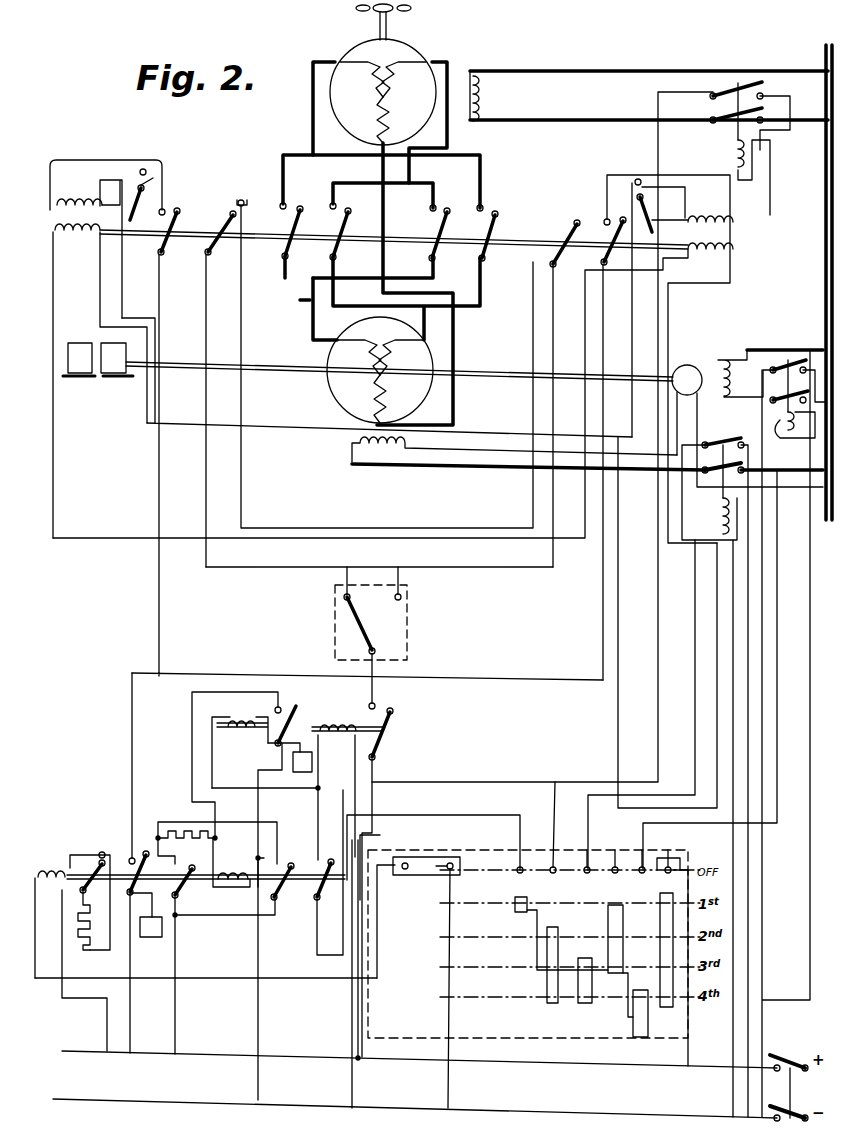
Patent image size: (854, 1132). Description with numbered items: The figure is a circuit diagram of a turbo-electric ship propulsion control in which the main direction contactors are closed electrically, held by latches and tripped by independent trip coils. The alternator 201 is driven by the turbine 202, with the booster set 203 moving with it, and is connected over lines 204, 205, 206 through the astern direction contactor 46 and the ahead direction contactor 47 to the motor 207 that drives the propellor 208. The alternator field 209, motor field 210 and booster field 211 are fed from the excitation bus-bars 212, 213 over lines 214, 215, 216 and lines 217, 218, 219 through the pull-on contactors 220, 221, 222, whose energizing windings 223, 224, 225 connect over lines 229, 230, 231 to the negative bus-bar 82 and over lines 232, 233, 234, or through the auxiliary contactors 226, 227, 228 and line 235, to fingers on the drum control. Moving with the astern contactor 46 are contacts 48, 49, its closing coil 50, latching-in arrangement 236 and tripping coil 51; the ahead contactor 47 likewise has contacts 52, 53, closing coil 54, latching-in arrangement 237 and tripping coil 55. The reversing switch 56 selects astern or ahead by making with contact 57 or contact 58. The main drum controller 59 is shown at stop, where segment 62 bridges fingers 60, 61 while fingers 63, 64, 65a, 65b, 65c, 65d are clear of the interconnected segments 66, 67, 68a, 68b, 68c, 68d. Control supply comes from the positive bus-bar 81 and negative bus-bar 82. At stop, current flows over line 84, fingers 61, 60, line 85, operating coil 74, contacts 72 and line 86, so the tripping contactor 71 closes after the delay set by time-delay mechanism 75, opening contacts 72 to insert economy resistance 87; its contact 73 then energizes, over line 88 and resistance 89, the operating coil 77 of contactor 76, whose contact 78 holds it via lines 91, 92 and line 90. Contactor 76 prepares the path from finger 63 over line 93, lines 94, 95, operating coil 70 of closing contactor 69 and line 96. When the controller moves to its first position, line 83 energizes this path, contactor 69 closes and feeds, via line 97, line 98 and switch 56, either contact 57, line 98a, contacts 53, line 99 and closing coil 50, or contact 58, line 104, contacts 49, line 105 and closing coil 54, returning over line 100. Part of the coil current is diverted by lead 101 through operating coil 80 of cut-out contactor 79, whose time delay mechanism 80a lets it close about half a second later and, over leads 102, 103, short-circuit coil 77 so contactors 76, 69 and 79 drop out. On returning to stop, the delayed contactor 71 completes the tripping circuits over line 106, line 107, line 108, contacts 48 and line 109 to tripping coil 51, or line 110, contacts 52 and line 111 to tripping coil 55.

The astern direction contactor 46 is at (343, 238).
The ahead direction contactor 47 is at (440, 245).
The contacts 48 is at (180, 210).
The contacts 49 is at (218, 240).
The closing coil 50 is at (76, 236).
The tripping coil 51 is at (68, 200).
The contacts 52 is at (608, 250).
The contacts 53 is at (562, 270).
The closing coil 54 is at (733, 248).
The tripping coil 55 is at (733, 221).
The reversing switch 56 is at (407, 648).
The contact 57 is at (340, 597).
The contact 58 is at (402, 597).
The main drum controller 59 is at (492, 1040).
The finger 60 is at (403, 870).
The finger 61 is at (447, 870).
The segment 62 is at (415, 878).
The finger 63 is at (517, 872).
The finger 64 is at (689, 958).
The finger 65a is at (551, 873).
The finger 65b is at (586, 873).
The finger 65c is at (614, 873).
The finger 65d is at (645, 866).
The segment 66 is at (515, 908).
The segment 67 is at (666, 1008).
The segment 68a is at (547, 985).
The segment 68b is at (585, 980).
The segment 68c is at (613, 975).
The segment 68d is at (640, 1037).
The closing contactor 69 is at (380, 746).
The operating coil 70 is at (347, 791).
The tripping contactor 71 is at (150, 852).
The contacts 72 is at (90, 855).
The contact 73 is at (188, 880).
The operating coil 74 is at (45, 868).
The time-delay mechanism 75 is at (147, 930).
The contactor 76 is at (330, 860).
The operating coil 77 is at (236, 862).
The contact 78 is at (278, 862).
The cut-out contactor 79 is at (282, 707).
The operating coil 80 is at (240, 720).
The time delay mechanism 80a is at (293, 762).
The positive bus-bar 81 is at (565, 1067).
The negative bus-bar 82 is at (605, 1117).
The line 83 is at (688, 1010).
The line 84 is at (448, 1005).
The line 85 is at (38, 905).
The line 86 is at (78, 998).
The economy resistance 87 is at (88, 930).
The line 88 is at (178, 1022).
The resistance 89 is at (168, 830).
The line 90 is at (259, 1008).
The line 91 is at (216, 915).
The line 92 is at (278, 832).
The line 93 is at (315, 955).
The line 94 is at (345, 812).
The line 95 is at (318, 770).
The line 96 is at (350, 1024).
The line 97 is at (362, 1055).
The line 98 is at (375, 702).
The line 98a is at (512, 567).
The line 99 is at (92, 538).
The line 100 is at (282, 428).
The lead 101 is at (312, 790).
The lead 102 is at (255, 790).
The lead 103 is at (192, 722).
The line 104 is at (252, 567).
The line 105 is at (330, 528).
The line 106 is at (128, 1050).
The line 107 is at (132, 768).
The line 108 is at (160, 505).
The line 109 is at (113, 160).
The line 110 is at (533, 680).
The line 111 is at (620, 175).
The alternator 201 is at (330, 388).
The turbine 202 is at (110, 378).
The booster set 203 is at (686, 365).
The line 204 is at (306, 303).
The line 205 is at (383, 238).
The line 206 is at (447, 326).
The motor 207 is at (363, 48).
The propellor 208 is at (412, 10).
The alternator field 209 is at (385, 458).
The motor field 210 is at (485, 72).
The booster field 211 is at (723, 358).
The excitation bus-bar 212 is at (826, 66).
The excitation bus-bar 213 is at (826, 60).
The line 214 is at (584, 71).
The line 215 is at (790, 348).
The line 216 is at (797, 497).
The line 217 is at (565, 120).
The line 218 is at (757, 368).
The line 219 is at (495, 468).
The contactor 220 is at (725, 478).
The contactor 221 is at (730, 110).
The contactor 222 is at (772, 368).
The energizing winding 223 is at (718, 512).
The energizing winding 224 is at (745, 148).
The energizing winding 225 is at (794, 434).
The auxiliary contactor 226 is at (722, 432).
The auxiliary contactor 227 is at (730, 88).
The auxiliary contactor 228 is at (795, 358).
The line 229 is at (762, 890).
The line 230 is at (732, 590).
The line 231 is at (810, 630).
The line 232 is at (693, 638).
The line 233 is at (745, 200).
The line 234 is at (775, 585).
The line 235 is at (715, 575).
The mechanical latching-in arrangement 236 is at (145, 195).
The mechanical latching-in arrangement 237 is at (650, 210).